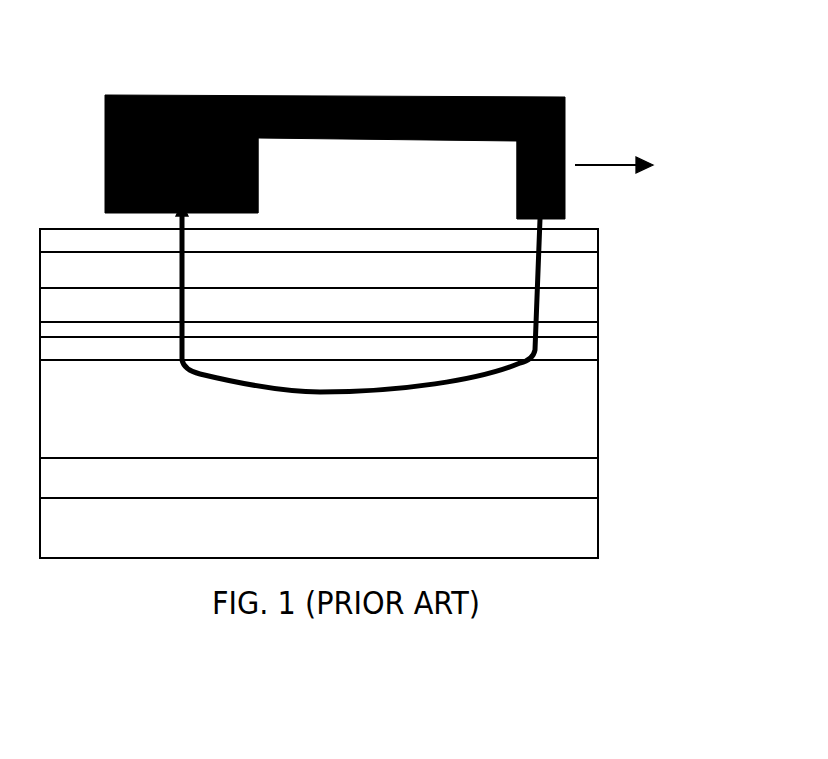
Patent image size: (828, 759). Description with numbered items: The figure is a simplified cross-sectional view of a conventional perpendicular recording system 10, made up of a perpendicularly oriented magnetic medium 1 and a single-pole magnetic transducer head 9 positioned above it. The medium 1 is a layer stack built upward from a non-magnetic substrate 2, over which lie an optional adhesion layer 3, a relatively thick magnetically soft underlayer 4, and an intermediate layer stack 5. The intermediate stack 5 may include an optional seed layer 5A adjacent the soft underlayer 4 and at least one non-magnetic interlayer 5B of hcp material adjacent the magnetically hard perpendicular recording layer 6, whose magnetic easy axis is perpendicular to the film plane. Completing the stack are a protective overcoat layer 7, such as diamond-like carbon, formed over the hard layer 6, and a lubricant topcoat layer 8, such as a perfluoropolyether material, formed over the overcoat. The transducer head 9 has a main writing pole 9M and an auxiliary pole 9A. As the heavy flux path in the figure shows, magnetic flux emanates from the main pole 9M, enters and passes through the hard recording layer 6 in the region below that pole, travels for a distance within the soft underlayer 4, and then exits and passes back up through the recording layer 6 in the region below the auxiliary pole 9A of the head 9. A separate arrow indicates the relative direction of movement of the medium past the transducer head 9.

The perpendicularly oriented magnetic medium 1 is at (35, 553).
The non-magnetic substrate 2 is at (600, 525).
The adhesion layer 3 is at (600, 486).
The magnetically soft underlayer 4 is at (600, 415).
The intermediate layer stack 5 is at (378, 350).
The seed layer 5A is at (600, 355).
The non-magnetic interlayer 5B is at (600, 335).
The magnetically hard perpendicular recording layer 6 is at (600, 316).
The protective overcoat layer 7 is at (600, 278).
The lubricant topcoat layer 8 is at (600, 252).
The magnetic transducer head 9 is at (80, 107).
The auxiliary pole 9A is at (261, 187).
The main writing pole 9M is at (514, 189).
The perpendicular recording system 10 is at (678, 555).